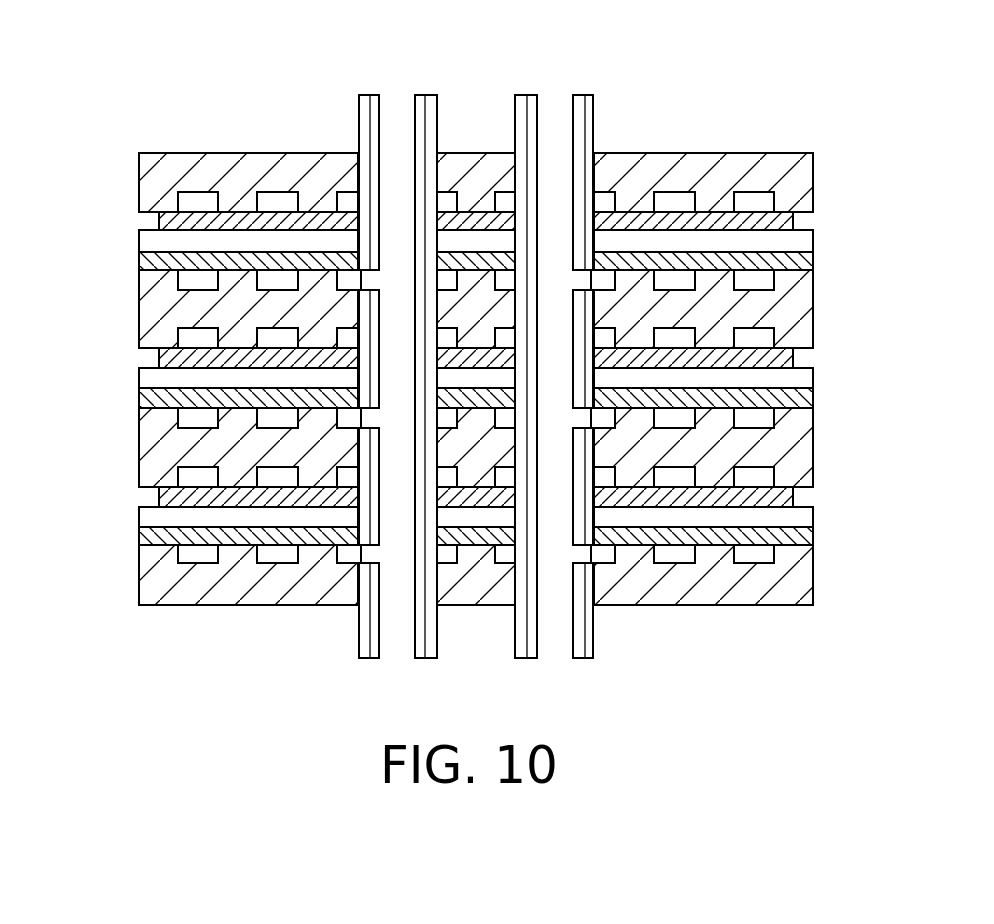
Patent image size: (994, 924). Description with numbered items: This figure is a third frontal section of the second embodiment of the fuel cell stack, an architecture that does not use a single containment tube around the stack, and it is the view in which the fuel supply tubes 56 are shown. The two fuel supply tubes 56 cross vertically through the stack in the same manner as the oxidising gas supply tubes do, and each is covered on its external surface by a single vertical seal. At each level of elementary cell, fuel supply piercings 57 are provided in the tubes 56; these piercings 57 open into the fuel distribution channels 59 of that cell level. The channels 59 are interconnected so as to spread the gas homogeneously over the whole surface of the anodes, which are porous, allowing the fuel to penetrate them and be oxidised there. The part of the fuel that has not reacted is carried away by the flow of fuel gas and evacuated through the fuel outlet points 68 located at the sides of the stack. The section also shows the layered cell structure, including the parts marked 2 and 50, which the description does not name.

The refrigerant passage rails 2 is at (516, 100).
The semiconductor module 50 is at (189, 198).
The fuel supply tube 56 is at (372, 100).
The fuel supply piercing 57 is at (347, 278).
The fuel distribution channel 59 is at (187, 342).
The fuel outlet point 68 is at (146, 262).